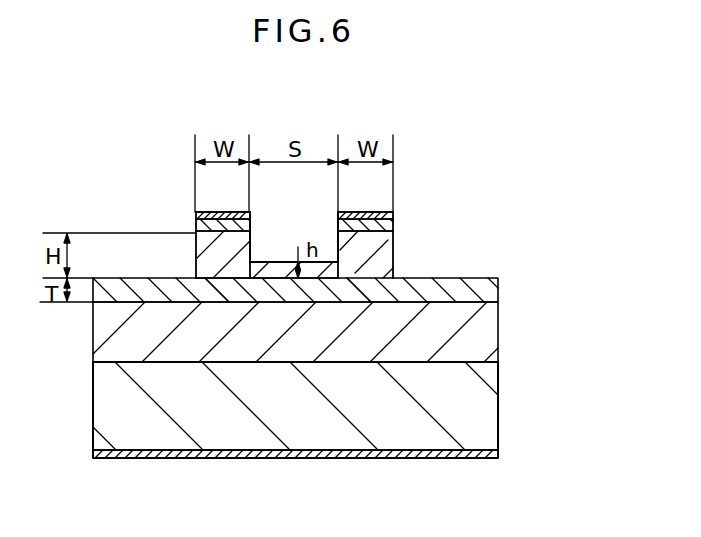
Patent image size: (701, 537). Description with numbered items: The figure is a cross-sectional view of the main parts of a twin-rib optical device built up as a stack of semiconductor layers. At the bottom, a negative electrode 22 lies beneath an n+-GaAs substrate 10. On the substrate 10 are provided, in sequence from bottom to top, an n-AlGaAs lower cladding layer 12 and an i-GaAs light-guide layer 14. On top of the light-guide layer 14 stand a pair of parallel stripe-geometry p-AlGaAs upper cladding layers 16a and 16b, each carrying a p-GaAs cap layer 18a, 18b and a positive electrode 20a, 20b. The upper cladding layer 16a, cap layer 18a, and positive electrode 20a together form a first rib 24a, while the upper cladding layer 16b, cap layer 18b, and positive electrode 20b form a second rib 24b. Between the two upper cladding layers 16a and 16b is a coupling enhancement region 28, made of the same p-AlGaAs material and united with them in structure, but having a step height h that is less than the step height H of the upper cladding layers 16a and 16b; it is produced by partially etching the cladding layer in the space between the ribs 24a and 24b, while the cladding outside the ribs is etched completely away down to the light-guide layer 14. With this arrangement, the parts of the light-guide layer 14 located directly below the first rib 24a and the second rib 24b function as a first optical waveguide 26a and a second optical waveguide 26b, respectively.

The n+-GaAs substrate 10 is at (493, 390).
The n-AlGaAs lower cladding layer 12 is at (492, 337).
The i-GaAs light-guide layer 14 is at (492, 293).
The negative electrode 22 is at (497, 448).
The p-AlGaAs upper cladding layer 16a is at (228, 240).
The p-GaAs cap layer 18a is at (251, 224).
The positive electrode 20a is at (251, 211).
The first rib 24a is at (307, 170).
The p-AlGaAs upper cladding layer 16b is at (385, 247).
The p-GaAs cap layer 18b is at (395, 225).
The positive electrode 20b is at (395, 212).
The second rib 24b is at (487, 150).
The coupling enhancement region 28 is at (300, 268).
The first optical waveguide 26a is at (217, 290).
The second optical waveguide 26b is at (354, 290).